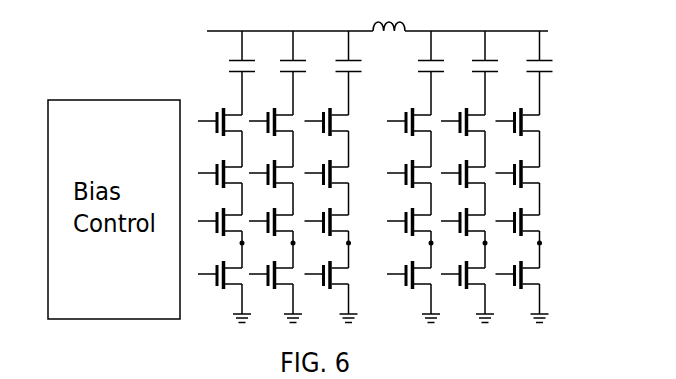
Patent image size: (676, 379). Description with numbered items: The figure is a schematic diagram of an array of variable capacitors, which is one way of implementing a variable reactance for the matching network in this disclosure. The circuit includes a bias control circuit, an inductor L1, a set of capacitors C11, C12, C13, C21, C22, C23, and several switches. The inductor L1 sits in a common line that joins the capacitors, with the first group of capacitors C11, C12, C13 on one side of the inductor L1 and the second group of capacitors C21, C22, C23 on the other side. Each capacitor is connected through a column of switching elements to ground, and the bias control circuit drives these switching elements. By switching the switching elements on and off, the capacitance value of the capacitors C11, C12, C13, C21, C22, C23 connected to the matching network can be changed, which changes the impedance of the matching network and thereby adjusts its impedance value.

The inductor L1 is at (389, 17).
The capacitor C11 is at (253, 51).
The capacitor C12 is at (304, 51).
The capacitor C13 is at (360, 51).
The capacitor C21 is at (442, 51).
The capacitor C22 is at (496, 51).
The capacitor C23 is at (551, 51).